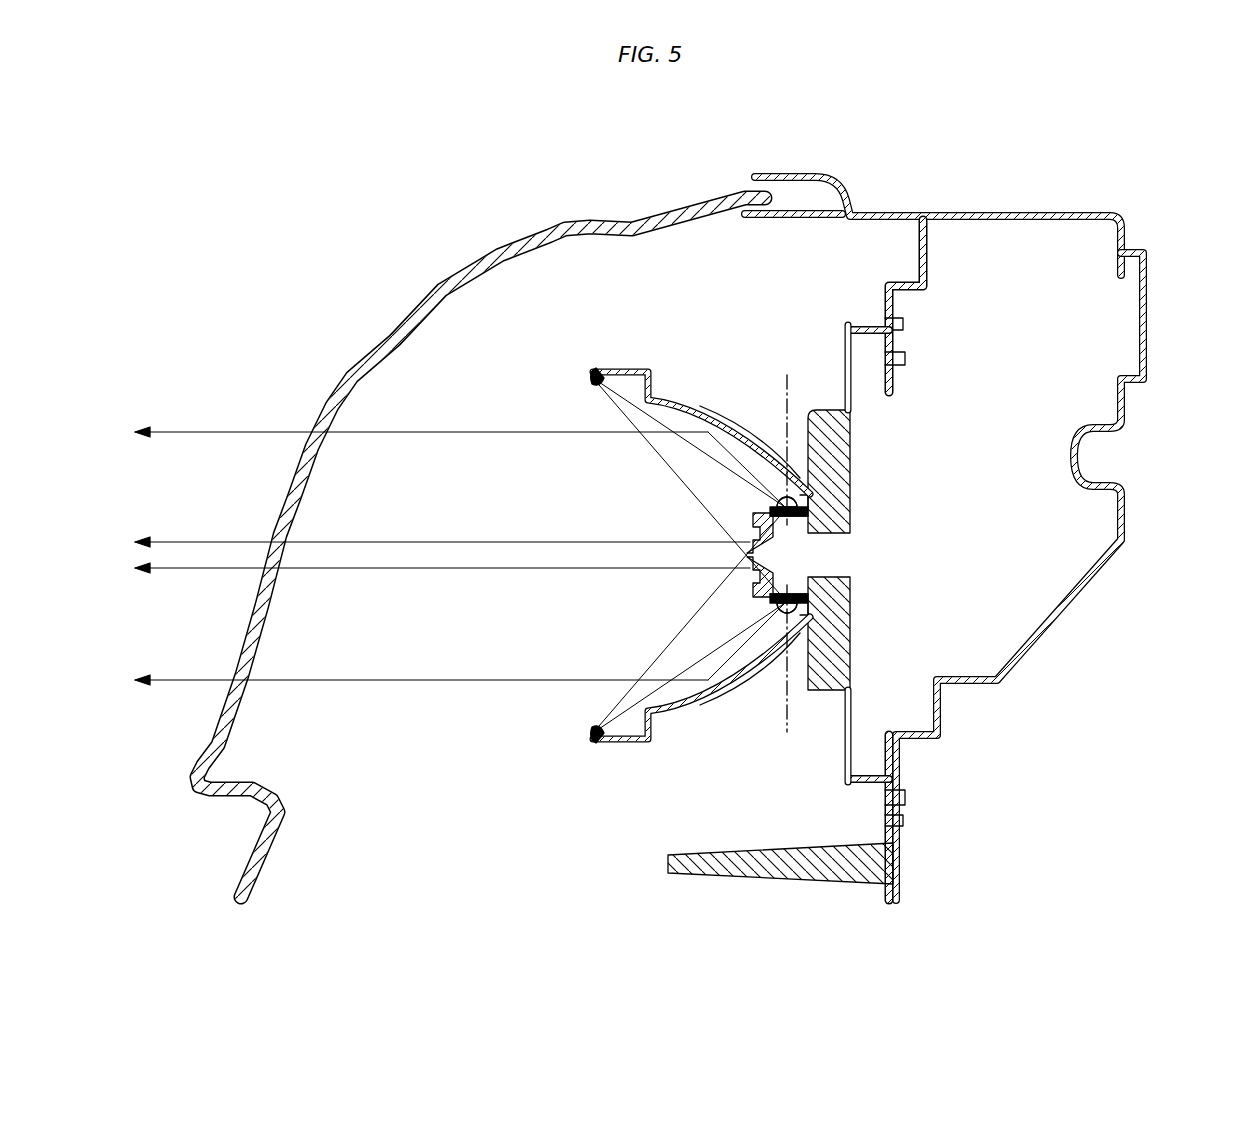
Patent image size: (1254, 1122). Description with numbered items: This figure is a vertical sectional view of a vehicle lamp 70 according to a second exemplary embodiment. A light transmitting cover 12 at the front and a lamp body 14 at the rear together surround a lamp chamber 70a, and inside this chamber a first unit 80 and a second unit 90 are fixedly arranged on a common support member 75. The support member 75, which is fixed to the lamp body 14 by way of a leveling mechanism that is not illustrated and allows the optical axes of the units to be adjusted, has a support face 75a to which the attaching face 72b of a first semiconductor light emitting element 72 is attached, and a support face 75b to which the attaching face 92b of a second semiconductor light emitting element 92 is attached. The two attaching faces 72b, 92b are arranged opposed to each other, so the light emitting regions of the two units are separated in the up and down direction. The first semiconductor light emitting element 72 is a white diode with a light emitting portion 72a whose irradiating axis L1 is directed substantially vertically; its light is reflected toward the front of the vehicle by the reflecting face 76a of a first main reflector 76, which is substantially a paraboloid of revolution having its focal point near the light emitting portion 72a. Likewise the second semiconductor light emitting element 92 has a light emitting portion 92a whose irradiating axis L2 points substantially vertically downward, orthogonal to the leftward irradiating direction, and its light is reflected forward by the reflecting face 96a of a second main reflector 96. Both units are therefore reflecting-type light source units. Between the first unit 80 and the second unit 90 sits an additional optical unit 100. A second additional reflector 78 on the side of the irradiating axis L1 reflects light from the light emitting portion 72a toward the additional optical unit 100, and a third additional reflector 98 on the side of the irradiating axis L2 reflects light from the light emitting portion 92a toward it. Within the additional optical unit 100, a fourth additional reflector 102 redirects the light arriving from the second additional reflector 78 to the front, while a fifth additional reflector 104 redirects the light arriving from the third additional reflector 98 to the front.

The light transmitting cover 12 is at (650, 218).
The lamp body 14 is at (974, 211).
The vehicle lamp 70 is at (943, 514).
The lamp chamber 70a is at (1122, 310).
The first semiconductor light emitting element 72 is at (845, 422).
The light emitting portion 72a is at (800, 522).
The attaching face 72b is at (810, 540).
The support member 75 is at (858, 438).
The support face 75a is at (805, 503).
The support face 75b is at (808, 598).
The first main reflector 76 is at (670, 413).
The reflecting face 76a is at (790, 462).
The second additional reflector 78 is at (598, 382).
The first unit 80 is at (522, 410).
The second unit 90 is at (512, 698).
The second semiconductor light emitting element 92 is at (795, 640).
The light emitting portion 92a is at (800, 590).
The attaching face 92b is at (800, 566).
The second main reflector 96 is at (670, 707).
The reflecting face 96a is at (668, 700).
The third additional reflector 98 is at (598, 729).
The additional optical unit 100 is at (625, 521).
The fourth additional reflector 102 is at (770, 508).
The fifth additional reflector 104 is at (765, 556).
The irradiating axis L1 is at (820, 385).
The irradiating axis L2 is at (775, 730).